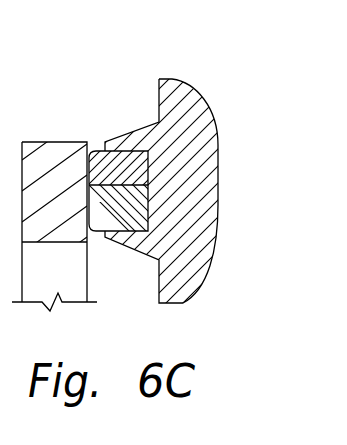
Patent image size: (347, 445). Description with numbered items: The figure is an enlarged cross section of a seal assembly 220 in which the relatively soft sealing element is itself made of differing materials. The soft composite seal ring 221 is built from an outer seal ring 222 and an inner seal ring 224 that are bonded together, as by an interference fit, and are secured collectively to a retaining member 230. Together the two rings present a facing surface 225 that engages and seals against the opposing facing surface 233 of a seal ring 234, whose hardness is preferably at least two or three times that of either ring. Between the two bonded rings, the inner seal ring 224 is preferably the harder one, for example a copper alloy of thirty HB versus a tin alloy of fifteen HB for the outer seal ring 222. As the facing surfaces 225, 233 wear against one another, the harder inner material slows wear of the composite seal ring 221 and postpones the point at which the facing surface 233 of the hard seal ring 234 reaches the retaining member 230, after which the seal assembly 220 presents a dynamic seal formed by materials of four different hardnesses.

The seal assembly 220 is at (123, 70).
The relatively soft seal ring 221 is at (112, 147).
The outer seal ring 222 is at (100, 178).
The inner seal ring 224 is at (125, 218).
The facing surface 225 is at (89, 203).
The retaining member 230 is at (175, 238).
The facing surface 233 is at (97, 147).
The seal ring 234 is at (35, 149).